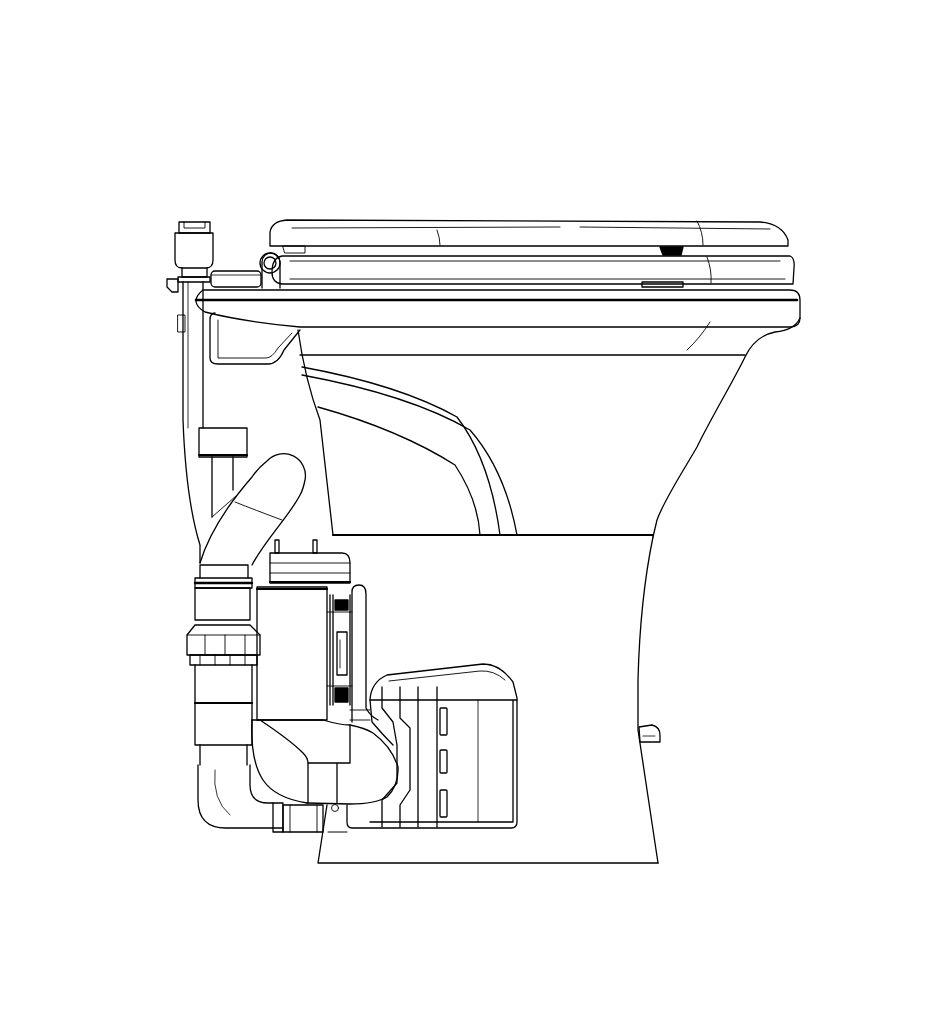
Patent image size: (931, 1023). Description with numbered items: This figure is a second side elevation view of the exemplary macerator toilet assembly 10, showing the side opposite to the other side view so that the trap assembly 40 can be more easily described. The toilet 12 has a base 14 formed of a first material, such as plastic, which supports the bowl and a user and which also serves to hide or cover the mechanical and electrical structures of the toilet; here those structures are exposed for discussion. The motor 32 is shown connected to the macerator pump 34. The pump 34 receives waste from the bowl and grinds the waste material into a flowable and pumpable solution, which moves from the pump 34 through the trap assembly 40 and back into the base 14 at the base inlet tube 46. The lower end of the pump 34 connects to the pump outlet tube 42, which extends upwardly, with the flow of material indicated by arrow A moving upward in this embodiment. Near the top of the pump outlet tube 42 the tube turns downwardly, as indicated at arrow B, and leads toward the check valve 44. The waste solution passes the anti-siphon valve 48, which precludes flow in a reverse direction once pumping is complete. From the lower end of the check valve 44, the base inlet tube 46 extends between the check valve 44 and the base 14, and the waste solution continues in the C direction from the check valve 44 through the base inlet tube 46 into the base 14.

The macerator toilet assembly 10 is at (770, 71).
The toilet 12 is at (342, 167).
The base 14 is at (590, 612).
The motor 32 is at (310, 621).
The macerator pump 34 is at (348, 645).
The trap assembly 40 is at (90, 752).
The pump outlet tube 42 is at (353, 780).
The check valve 44 is at (199, 682).
The base inlet tube 46 is at (227, 773).
The anti-siphon valve 48 is at (237, 442).